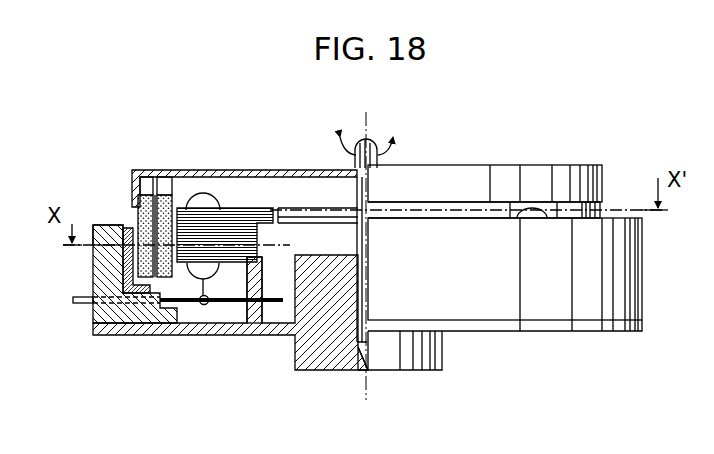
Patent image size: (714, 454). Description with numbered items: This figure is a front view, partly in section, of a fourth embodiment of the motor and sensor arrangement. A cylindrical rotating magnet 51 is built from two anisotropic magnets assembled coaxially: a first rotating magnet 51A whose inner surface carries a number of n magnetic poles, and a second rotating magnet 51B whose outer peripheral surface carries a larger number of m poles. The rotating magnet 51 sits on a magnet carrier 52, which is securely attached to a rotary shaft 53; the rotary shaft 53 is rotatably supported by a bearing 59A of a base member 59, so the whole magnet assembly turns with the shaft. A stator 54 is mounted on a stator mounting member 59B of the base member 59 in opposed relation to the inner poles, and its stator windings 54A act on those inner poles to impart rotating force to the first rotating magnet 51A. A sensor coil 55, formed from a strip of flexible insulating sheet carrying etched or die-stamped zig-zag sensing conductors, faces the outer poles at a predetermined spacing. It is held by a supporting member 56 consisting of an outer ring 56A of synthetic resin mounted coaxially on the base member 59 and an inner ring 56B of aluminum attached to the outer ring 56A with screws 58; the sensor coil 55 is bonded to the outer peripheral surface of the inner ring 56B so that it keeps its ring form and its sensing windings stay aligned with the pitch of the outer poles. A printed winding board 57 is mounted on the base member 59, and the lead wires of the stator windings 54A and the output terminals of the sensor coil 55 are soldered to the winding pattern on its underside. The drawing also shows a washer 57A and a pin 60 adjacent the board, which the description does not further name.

The rotating magnet 51 is at (151, 197).
The first rotating magnet 51A is at (165, 197).
The second rotating magnet 51B is at (145, 197).
The magnet carrier 52 is at (312, 170).
The rotary shaft 53 is at (368, 142).
The stator 54 is at (262, 208).
The stator windings 54A is at (207, 203).
The sensor coil 55 is at (123, 253).
The supporting member 56 is at (96, 243).
The outer ring 56A is at (97, 279).
The inner ring 56B is at (117, 225).
The printed winding board 57 is at (177, 308).
The washer 57A is at (210, 306).
The screws 58 is at (532, 207).
The base member 59 is at (230, 329).
The bearing 59A is at (332, 357).
The stator mounting member 59B is at (256, 270).
The pin 60 is at (204, 287).